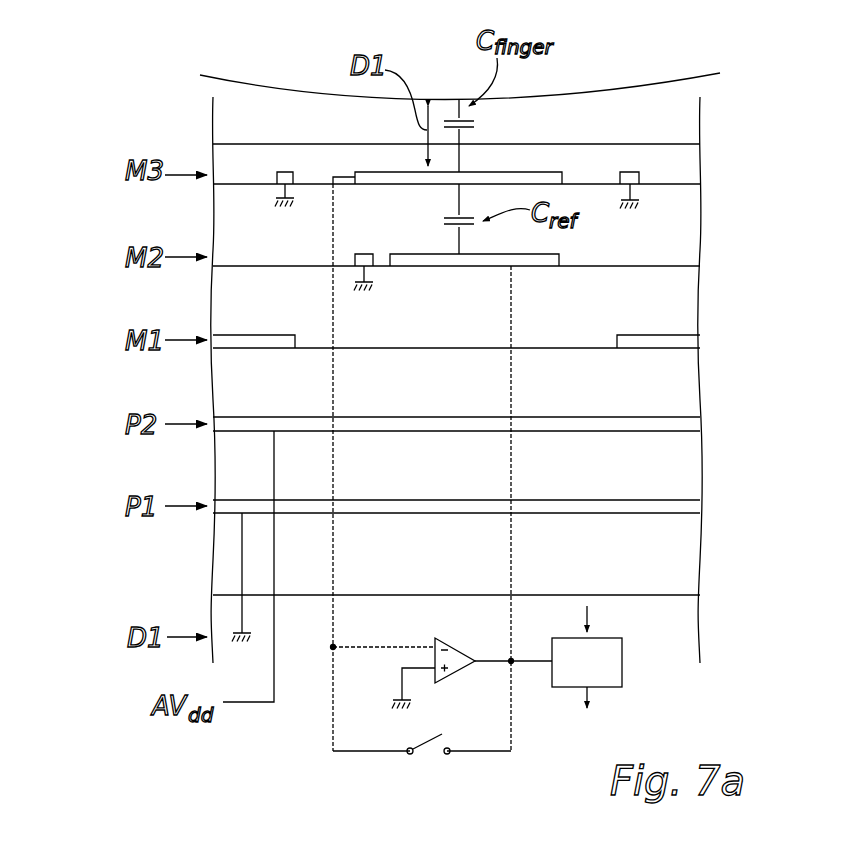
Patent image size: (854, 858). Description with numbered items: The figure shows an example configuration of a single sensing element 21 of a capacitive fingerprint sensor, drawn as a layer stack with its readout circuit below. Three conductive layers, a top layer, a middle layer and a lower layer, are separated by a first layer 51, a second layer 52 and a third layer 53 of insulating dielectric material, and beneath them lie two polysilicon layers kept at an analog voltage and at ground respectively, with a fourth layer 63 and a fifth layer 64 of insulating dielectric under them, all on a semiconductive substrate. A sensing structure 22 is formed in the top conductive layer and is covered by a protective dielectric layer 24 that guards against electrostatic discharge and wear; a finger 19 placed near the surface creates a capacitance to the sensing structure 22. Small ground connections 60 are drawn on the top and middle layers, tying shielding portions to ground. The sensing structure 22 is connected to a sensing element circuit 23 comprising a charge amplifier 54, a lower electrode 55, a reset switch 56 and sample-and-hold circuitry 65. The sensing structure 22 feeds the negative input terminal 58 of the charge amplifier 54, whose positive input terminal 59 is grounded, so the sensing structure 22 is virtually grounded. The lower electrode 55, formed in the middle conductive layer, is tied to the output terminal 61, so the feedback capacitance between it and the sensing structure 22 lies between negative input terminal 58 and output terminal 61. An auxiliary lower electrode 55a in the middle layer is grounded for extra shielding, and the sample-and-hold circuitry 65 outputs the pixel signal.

The sensing element 21 is at (118, 70).
The finger 19 is at (452, 28).
The sensing structure 22 is at (552, 182).
The protective dielectric layer 24 is at (690, 163).
The ground connection / shield electrode 60 is at (282, 172).
The first layer of insulating dielectric material 51 is at (683, 232).
The lower electrode 55 is at (520, 262).
The auxiliary lower electrode 55a is at (353, 263).
The second layer of insulating dielectric material 52 is at (680, 323).
The third layer of insulating dielectric material 53 is at (675, 402).
The fourth layer of insulating dielectric material 63 is at (672, 485).
The fifth layer of insulating dielectric material 64 is at (683, 571).
The sensing element circuit 23 is at (296, 740).
The negative input terminal 58 is at (395, 645).
The charge amplifier 54 is at (452, 655).
The positive input terminal 59 is at (418, 668).
The output terminal 61 is at (487, 663).
The sample-and-hold circuitry 65 is at (622, 647).
The reset switch 56 is at (417, 765).